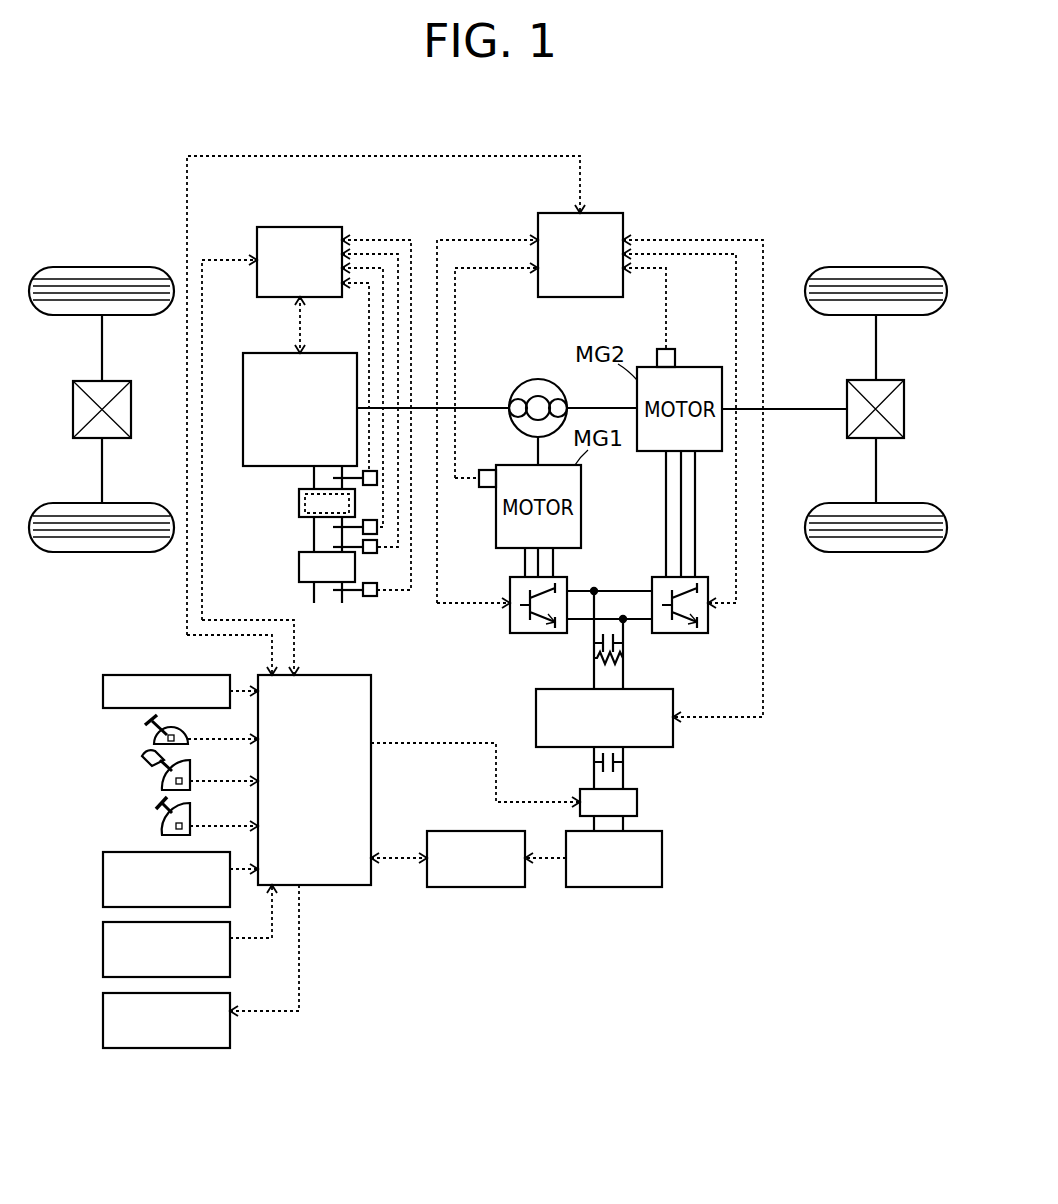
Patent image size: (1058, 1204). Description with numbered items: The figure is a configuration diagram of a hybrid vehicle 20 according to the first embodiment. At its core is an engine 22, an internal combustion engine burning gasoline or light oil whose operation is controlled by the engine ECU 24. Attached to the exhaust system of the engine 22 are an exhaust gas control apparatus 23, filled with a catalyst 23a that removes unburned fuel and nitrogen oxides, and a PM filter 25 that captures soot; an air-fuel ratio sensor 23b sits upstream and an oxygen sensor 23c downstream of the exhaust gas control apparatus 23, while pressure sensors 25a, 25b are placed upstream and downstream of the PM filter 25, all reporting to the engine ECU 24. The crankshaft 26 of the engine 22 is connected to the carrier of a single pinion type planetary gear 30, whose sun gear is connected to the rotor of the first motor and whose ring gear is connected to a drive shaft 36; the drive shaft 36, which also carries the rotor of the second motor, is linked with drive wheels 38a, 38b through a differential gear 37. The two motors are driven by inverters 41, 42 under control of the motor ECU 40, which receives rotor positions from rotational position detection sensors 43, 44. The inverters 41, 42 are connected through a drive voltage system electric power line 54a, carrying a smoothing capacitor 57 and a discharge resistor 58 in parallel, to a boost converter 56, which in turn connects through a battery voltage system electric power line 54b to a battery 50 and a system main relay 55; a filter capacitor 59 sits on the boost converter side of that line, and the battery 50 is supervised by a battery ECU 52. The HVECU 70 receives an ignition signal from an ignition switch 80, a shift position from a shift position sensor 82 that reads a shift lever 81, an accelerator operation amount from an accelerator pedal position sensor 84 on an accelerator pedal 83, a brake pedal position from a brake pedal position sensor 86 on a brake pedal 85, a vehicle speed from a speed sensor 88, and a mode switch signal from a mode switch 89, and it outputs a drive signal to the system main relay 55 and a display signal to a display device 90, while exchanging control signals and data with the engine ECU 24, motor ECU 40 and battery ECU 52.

The hybrid vehicle 20 is at (690, 157).
The engine 22 is at (322, 353).
The exhaust gas control apparatus 23 is at (299, 497).
The catalyst 23a is at (305, 505).
The air-fuel ratio sensor 23b is at (377, 478).
The oxygen sensor 23c is at (377, 527).
The engine ECU 24 is at (300, 226).
The PM filter 25 is at (299, 577).
The pressure sensor 25a is at (377, 547).
The pressure sensor 25b is at (372, 596).
The crankshaft 26 is at (490, 407).
The planetary gear 30 is at (538, 379).
The drive shaft 36 is at (797, 409).
The differential gear 37 is at (888, 380).
The drive wheel 38a is at (870, 267).
The drive wheel 38b is at (868, 552).
The motor ECU 40 is at (604, 213).
The inverter 41 is at (568, 577).
The inverter 42 is at (700, 577).
The rotational position detection sensor 43 is at (486, 470).
The rotational position detection sensor 44 is at (660, 348).
The battery 50 is at (662, 860).
The battery ECU 52 is at (480, 887).
The drive voltage system electric power line 54a is at (594, 678).
The battery voltage system electric power line 54b is at (623, 782).
The system main relay 55 is at (640, 802).
The boost converter 56 is at (673, 702).
The smoothing capacitor 57 is at (594, 645).
The discharge resistor 58 is at (623, 657).
The filter capacitor 59 is at (600, 768).
The HVECU 70 is at (335, 887).
The ignition switch 80 is at (103, 692).
The shift lever 81 is at (147, 722).
The shift position sensor 82 is at (153, 741).
The accelerator pedal 83 is at (150, 765).
The accelerator pedal position sensor 84 is at (162, 784).
The brake pedal 85 is at (158, 812).
The brake pedal position sensor 86 is at (162, 830).
The speed sensor 88 is at (103, 870).
The mode switch 89 is at (103, 940).
The display device 90 is at (103, 1010).